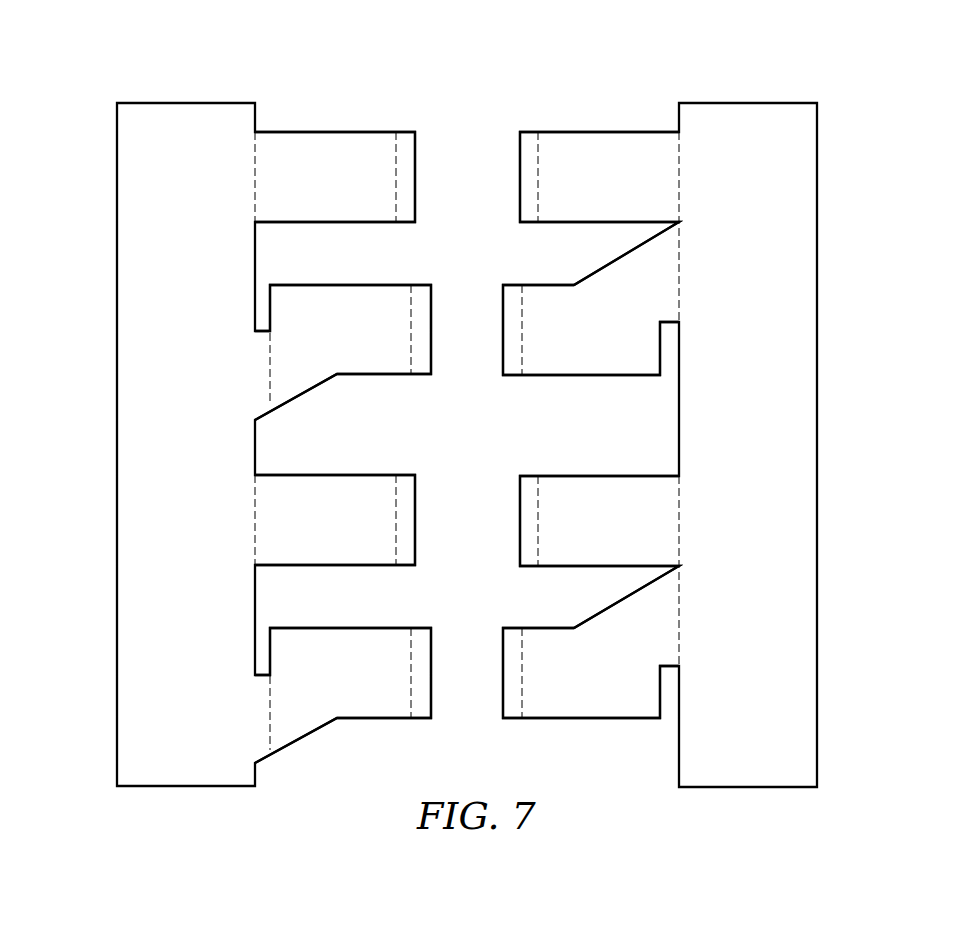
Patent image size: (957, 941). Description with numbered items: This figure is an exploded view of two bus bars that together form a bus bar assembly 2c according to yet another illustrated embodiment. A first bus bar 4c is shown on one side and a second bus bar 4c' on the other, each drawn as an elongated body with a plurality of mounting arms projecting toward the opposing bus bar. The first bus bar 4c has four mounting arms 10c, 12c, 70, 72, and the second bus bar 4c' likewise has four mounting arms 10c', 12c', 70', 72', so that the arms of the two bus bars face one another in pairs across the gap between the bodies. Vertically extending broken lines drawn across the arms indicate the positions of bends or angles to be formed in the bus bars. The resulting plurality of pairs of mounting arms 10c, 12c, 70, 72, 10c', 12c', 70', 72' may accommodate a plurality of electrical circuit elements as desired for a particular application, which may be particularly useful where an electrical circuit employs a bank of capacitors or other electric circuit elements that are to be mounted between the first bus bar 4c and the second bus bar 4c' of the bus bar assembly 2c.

The bus bar assembly 2c is at (498, 89).
The first bus bar 4c is at (692, 414).
The second bus bar 4c' is at (241, 414).
The mounting arm 12c is at (700, 227).
The mounting arm 12c' is at (233, 177).
The mounting arm 10c is at (692, 330).
The mounting arm 10c' is at (241, 352).
The mounting arm 72 is at (696, 571).
The mounting arm 72' is at (237, 520).
The mounting arm 70 is at (688, 673).
The mounting arm 70' is at (245, 695).